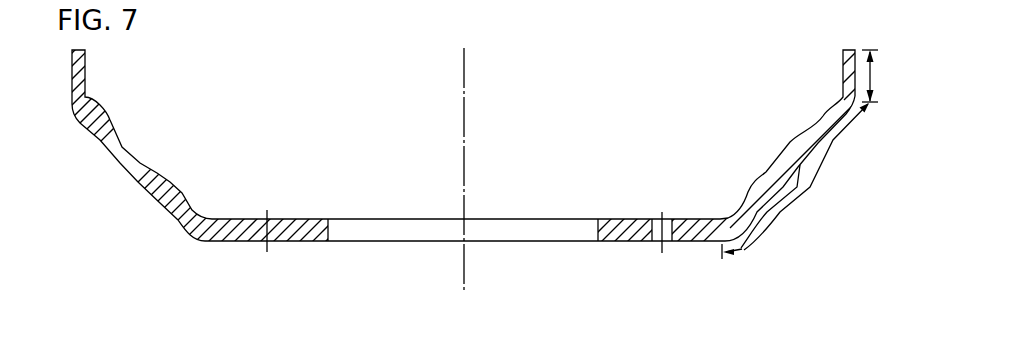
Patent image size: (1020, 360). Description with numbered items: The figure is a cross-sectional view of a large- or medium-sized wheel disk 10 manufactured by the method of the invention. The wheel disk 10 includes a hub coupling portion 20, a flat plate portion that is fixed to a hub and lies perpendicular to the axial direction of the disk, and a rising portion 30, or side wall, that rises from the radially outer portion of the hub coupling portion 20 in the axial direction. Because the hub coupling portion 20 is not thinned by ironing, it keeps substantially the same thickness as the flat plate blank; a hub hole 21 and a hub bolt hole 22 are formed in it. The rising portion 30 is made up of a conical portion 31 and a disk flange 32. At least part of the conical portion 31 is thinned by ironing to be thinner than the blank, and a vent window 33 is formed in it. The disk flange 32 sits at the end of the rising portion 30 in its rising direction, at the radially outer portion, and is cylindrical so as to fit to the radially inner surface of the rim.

The wheel disk 10 is at (240, 217).
The hub coupling portion 20 is at (293, 228).
The hub hole 21 is at (597, 232).
The hub bolt hole 22 is at (672, 233).
The rising portion 30 is at (802, 157).
The conical portion 31 is at (818, 171).
The disk flange 32 is at (872, 77).
The vent window 33 is at (113, 137).